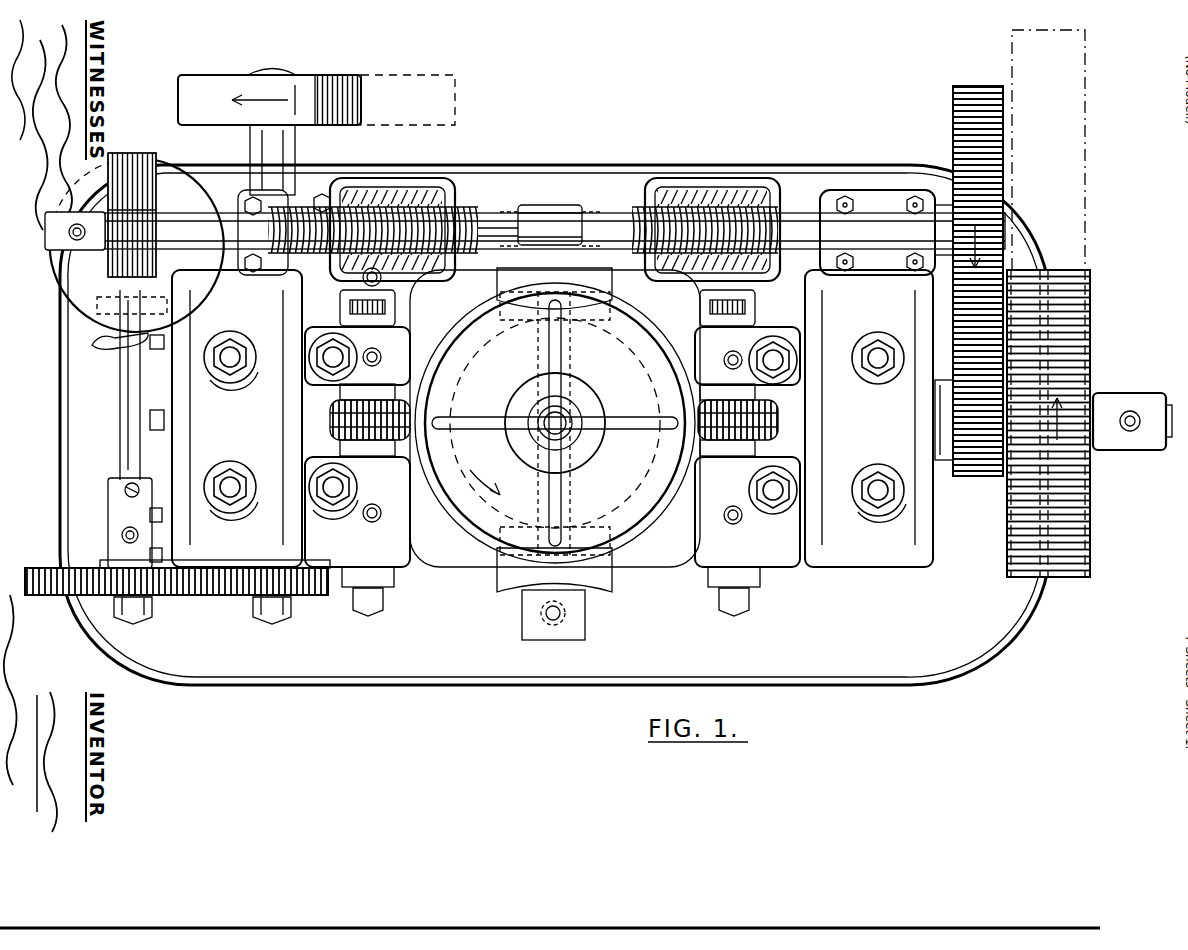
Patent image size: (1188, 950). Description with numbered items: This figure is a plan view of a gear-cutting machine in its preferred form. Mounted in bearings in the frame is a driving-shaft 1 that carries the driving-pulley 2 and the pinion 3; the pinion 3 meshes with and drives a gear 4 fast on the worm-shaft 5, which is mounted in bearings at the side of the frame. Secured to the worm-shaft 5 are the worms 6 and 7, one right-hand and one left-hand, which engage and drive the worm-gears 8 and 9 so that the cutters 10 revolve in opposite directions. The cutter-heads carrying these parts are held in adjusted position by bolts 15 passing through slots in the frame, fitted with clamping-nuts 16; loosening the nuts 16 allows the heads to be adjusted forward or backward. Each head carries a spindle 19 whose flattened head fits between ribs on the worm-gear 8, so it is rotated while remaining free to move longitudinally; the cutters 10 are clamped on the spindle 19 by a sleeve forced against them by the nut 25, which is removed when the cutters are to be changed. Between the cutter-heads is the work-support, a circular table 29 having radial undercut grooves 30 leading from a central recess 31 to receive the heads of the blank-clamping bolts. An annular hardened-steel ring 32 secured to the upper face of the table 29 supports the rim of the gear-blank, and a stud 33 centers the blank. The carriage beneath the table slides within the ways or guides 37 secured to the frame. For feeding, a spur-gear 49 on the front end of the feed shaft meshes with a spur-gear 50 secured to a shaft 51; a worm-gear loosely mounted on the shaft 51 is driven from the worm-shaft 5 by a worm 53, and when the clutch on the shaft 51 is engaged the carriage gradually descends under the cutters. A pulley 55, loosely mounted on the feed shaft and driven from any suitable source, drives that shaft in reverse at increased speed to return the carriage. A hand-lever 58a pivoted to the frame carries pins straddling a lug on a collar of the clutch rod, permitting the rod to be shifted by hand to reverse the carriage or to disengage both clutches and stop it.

The driving-shaft 1 is at (1170, 404).
The driving-pulley 2 is at (1085, 528).
The pinion 3 is at (978, 478).
The gear 4 is at (953, 98).
The worm-shaft 5 is at (595, 218).
The worm 6 is at (770, 195).
The worm 7 is at (412, 192).
The worm-gear 8 is at (845, 233).
The worm-gear 9 is at (470, 218).
The cutters 10 is at (412, 398).
The bolts 15 is at (240, 350).
The clamping-nuts 16 is at (232, 352).
The spindle 19 is at (392, 310).
The nut 25 is at (362, 618).
The circular table 29 is at (555, 423).
The radial undercut grooves 30 is at (548, 355).
The central recess 31 is at (561, 429).
The annular hardened-steel ring 32 is at (622, 315).
The stud 33 is at (553, 424).
The ways or guides 37 is at (548, 212).
The spur-gear 49 is at (327, 600).
The spur-gear 50 is at (188, 598).
The shaft 51 is at (128, 407).
The worm 53 is at (160, 220).
The pulley 55 is at (325, 76).
The hand-lever 58a is at (100, 345).